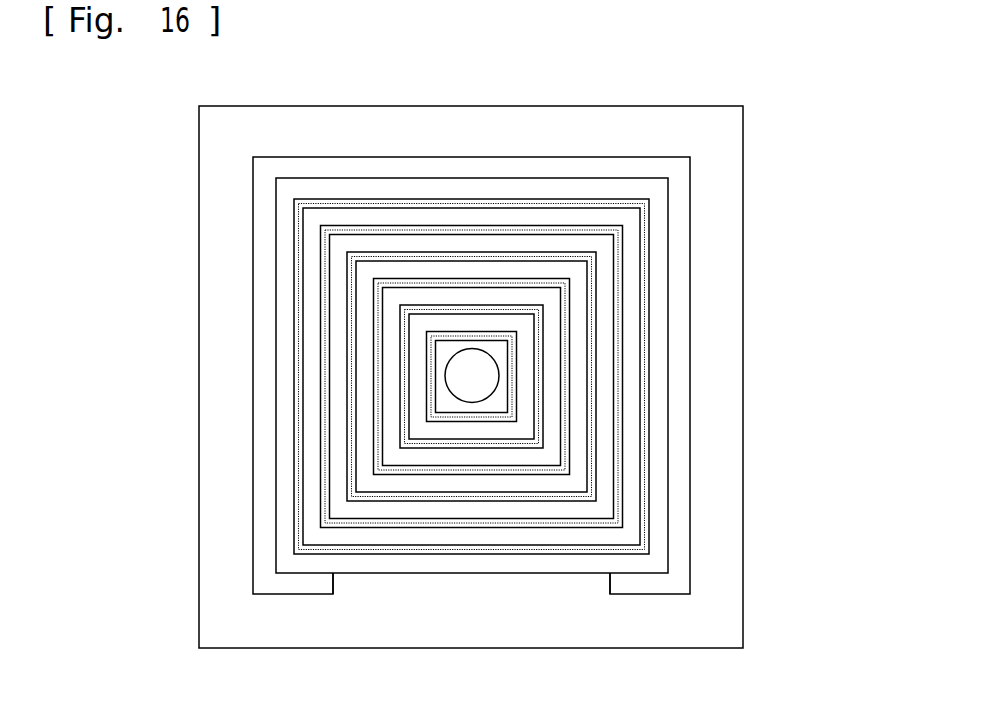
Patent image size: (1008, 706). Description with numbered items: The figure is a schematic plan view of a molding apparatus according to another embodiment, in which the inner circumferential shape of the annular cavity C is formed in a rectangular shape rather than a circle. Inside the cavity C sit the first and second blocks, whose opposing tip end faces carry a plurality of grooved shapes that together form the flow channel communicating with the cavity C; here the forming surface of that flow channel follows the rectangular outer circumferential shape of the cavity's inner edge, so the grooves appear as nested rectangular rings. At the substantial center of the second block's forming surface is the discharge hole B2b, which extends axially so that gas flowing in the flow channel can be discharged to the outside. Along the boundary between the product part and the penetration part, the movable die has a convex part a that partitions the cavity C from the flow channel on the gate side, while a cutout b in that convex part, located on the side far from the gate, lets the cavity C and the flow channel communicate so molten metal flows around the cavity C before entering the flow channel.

The cavity C is at (725, 243).
The convex part a is at (678, 448).
The cutout b is at (605, 582).
The discharge hole B2b is at (448, 387).